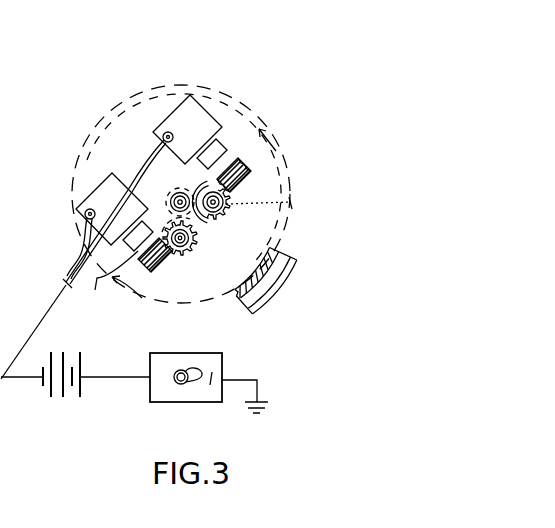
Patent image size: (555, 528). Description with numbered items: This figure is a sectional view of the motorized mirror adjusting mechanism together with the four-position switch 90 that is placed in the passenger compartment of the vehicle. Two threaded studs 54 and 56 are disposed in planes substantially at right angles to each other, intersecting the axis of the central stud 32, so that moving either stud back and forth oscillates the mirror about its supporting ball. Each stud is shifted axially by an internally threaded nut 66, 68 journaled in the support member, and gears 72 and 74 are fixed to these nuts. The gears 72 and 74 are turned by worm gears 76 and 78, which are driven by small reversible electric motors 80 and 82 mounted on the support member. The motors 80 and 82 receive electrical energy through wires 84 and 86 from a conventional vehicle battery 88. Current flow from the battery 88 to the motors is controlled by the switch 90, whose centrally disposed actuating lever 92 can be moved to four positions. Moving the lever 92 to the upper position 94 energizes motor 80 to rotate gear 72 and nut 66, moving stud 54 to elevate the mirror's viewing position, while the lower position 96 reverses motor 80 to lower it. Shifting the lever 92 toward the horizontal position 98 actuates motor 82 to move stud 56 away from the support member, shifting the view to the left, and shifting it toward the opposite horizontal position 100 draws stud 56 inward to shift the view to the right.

The stud 32 is at (172, 197).
The threaded stud 54 is at (194, 240).
The threaded stud 56 is at (207, 224).
The internally threaded nut 66 is at (187, 258).
The internally threaded nut 68 is at (291, 203).
The gear 72 is at (160, 263).
The gear 74 is at (278, 222).
The worm gear 76 is at (108, 278).
The worm gear 78 is at (236, 161).
The reversible electric motor 80 is at (84, 204).
The reversible electric motor 82 is at (208, 92).
The wire 84 is at (64, 262).
The wire 86 is at (144, 158).
The battery 88 is at (45, 390).
The four-position switch 90 is at (209, 396).
The actuating lever 92 is at (199, 371).
The upper position 94 is at (188, 370).
The lower position 96 is at (183, 387).
The horizontal position 98 is at (150, 386).
The horizontal position 100 is at (222, 385).